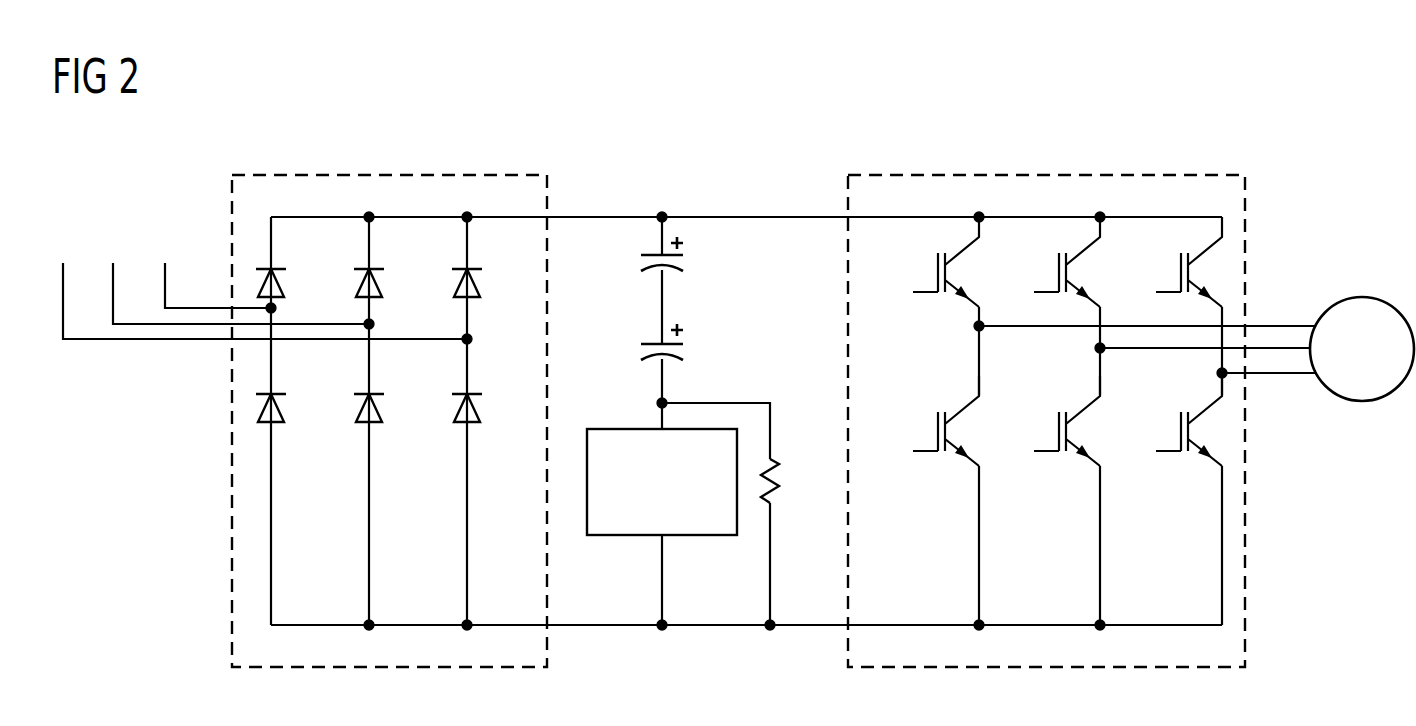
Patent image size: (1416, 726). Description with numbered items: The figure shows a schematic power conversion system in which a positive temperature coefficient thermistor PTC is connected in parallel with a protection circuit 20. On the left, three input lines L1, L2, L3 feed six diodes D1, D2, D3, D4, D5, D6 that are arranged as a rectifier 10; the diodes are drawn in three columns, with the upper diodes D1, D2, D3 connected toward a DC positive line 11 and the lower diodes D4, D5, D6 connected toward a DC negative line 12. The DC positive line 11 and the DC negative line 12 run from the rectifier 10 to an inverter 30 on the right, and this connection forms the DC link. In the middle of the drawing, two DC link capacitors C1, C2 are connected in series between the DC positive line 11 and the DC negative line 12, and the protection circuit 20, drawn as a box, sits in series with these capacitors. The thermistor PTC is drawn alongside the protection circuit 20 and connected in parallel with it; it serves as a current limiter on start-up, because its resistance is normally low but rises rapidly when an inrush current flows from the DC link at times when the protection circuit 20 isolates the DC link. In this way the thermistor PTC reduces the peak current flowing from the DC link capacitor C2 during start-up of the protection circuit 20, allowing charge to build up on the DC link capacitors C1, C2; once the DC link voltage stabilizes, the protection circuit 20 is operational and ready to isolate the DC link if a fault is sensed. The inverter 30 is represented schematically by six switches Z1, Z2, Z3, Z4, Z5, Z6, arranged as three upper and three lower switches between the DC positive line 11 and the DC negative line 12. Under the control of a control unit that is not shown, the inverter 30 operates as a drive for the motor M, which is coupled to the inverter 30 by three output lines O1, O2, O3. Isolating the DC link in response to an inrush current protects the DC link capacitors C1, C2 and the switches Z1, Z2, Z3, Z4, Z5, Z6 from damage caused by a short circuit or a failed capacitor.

The rectifier 10 is at (406, 174).
The DC positive line 11 is at (590, 216).
The DC negative line 12 is at (590, 627).
The protection circuit 20 is at (700, 537).
The inverter 30 is at (1059, 174).
The diode D1 is at (281, 281).
The diode D2 is at (379, 281).
The diode D3 is at (477, 281).
The diode D4 is at (281, 406).
The diode D5 is at (379, 406).
The diode D6 is at (477, 406).
The input line L1 is at (262, 285).
The input line L2 is at (238, 278).
The input line L3 is at (215, 270).
The DC link capacitor C1 is at (638, 262).
The DC link capacitor C2 is at (638, 350).
The positive temperature coefficient thermistor PTC is at (794, 481).
The switch Z1 is at (936, 270).
The switch Z2 is at (1057, 270).
The switch Z3 is at (1179, 270).
The switch Z4 is at (936, 430).
The switch Z5 is at (1057, 430).
The switch Z6 is at (1179, 430).
The output line O1 is at (1275, 325).
The output line O2 is at (1297, 347).
The output line O3 is at (1279, 375).
The motor M is at (1362, 349).